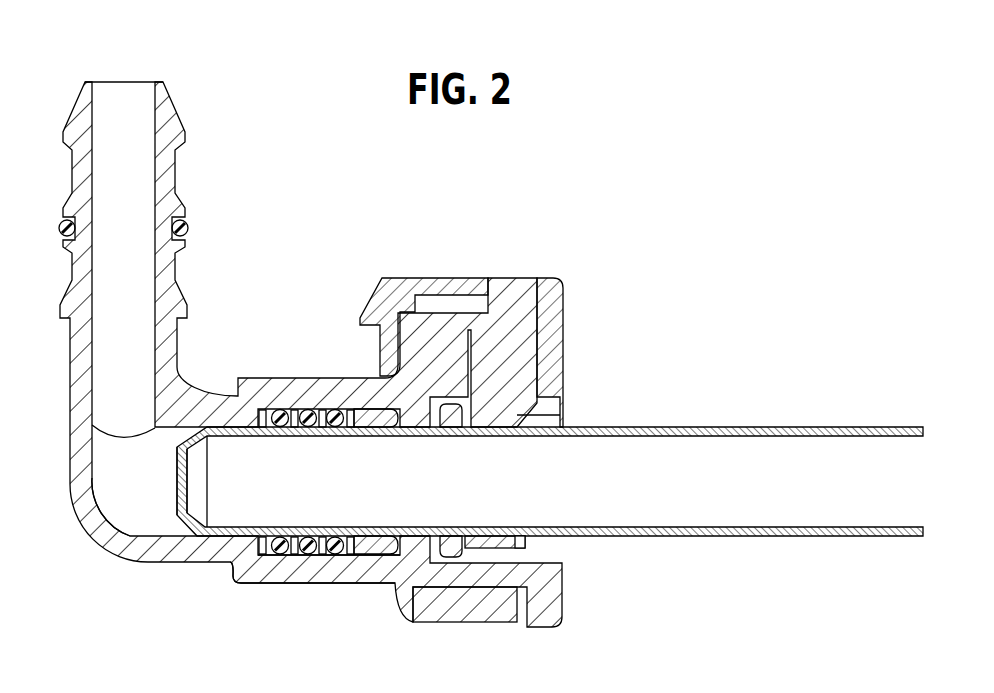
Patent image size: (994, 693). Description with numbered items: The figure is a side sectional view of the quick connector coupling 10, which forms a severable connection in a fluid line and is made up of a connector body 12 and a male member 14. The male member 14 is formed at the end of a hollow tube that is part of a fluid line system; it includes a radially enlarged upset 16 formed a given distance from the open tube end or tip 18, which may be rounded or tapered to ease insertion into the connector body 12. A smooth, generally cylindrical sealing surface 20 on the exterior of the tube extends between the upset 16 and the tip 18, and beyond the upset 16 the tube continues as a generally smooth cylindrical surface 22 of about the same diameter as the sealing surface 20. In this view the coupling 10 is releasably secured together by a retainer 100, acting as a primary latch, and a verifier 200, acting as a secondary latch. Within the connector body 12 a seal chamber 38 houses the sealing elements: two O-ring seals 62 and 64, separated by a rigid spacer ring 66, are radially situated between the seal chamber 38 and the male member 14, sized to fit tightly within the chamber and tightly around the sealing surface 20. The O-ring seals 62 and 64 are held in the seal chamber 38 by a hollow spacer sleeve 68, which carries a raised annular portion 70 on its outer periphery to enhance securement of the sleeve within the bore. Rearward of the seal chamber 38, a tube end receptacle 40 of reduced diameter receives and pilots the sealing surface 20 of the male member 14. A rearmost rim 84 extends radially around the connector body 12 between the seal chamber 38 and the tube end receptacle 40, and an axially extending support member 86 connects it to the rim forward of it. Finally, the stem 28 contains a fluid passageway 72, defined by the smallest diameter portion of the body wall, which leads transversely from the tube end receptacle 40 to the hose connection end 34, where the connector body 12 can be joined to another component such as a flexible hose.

The quick connector coupling 10 is at (470, 379).
The connector body 12 is at (430, 318).
The male member 14 is at (795, 512).
The radially enlarged upset 16 is at (470, 552).
The tube end or tip 18 is at (195, 507).
The cylindrical sealing surface 20 is at (270, 540).
The smooth cylindrical surface 22 is at (781, 423).
The stem 28 is at (80, 387).
The hose connection end 34 is at (167, 117).
The seal chamber 38 is at (335, 558).
The tube end receptacle 40 is at (161, 507).
The O-ring seal 62 is at (280, 410).
The O-ring seal 64 is at (335, 410).
The rigid spacer ring 66 is at (308, 410).
The hollow spacer sleeve 68 is at (375, 407).
The raised annular portion 70 is at (385, 560).
The fluid passageway 72 is at (107, 265).
The rearmost rim 84 is at (236, 574).
The support member 86 is at (310, 585).
The retainer 100 is at (497, 622).
The verifier 200 is at (510, 278).